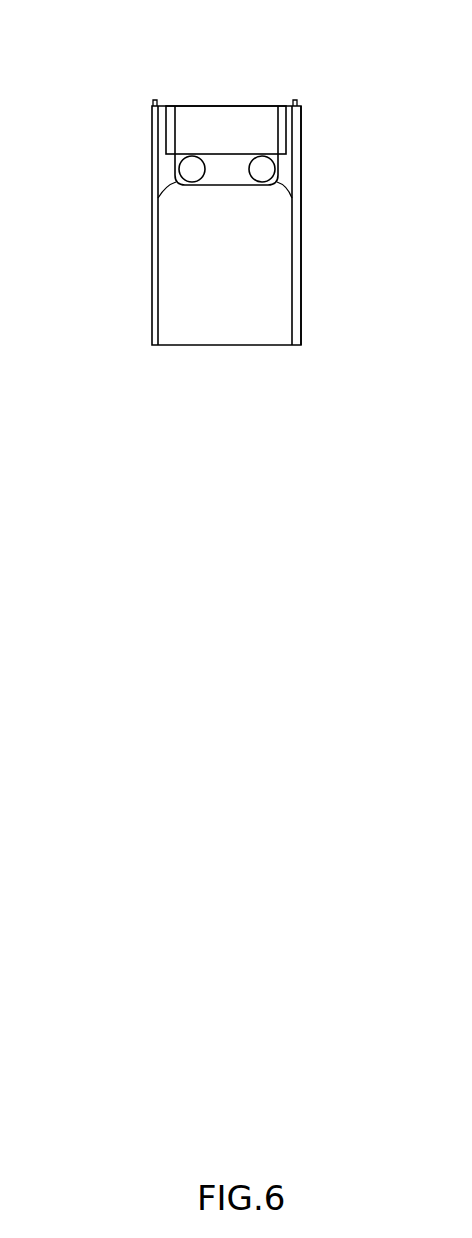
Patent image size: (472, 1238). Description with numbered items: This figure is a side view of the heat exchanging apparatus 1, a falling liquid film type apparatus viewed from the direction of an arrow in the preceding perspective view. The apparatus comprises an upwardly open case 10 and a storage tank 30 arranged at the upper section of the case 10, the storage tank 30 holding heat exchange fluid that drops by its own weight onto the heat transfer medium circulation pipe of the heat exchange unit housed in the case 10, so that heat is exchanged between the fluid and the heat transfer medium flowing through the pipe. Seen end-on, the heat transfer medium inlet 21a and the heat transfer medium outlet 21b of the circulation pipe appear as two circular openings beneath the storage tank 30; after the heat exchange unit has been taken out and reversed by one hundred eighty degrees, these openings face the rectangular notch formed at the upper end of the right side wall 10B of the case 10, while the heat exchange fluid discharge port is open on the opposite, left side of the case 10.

The heat exchanging apparatus 1 is at (306, 114).
The case 10 is at (148, 292).
The side wall 10B is at (283, 277).
The storage tank 30 is at (249, 120).
The heat transfer medium inlet 21a is at (176, 184).
The heat transfer medium outlet 21b is at (278, 180).